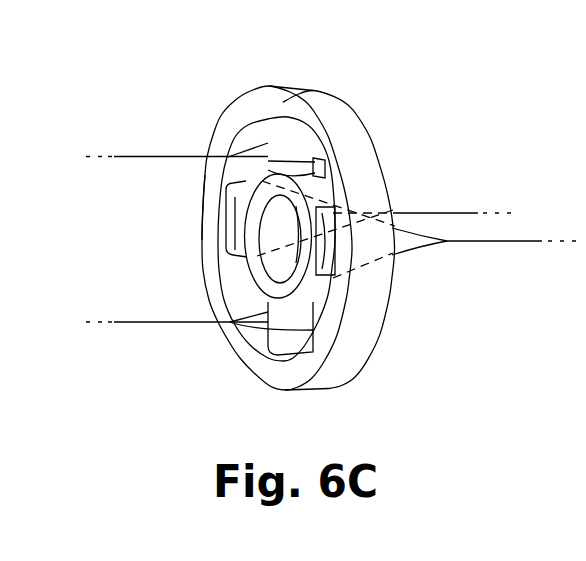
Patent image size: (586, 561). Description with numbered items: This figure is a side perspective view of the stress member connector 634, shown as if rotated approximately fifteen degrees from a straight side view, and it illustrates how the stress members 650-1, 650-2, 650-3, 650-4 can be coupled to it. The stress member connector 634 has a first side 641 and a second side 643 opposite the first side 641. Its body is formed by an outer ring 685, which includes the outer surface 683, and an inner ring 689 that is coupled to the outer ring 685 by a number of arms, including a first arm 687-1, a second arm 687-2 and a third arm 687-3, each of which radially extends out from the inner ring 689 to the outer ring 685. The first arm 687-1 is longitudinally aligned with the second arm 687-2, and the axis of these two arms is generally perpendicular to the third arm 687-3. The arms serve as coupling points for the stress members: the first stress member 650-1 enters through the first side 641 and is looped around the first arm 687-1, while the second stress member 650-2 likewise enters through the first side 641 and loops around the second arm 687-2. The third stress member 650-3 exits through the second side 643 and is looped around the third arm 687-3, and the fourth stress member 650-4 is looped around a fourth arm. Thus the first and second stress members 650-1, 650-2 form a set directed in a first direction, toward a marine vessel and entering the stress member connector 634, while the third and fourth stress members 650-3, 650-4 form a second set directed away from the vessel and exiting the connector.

The stress member connector 634 is at (229, 74).
The first side 641 is at (182, 194).
The second side 643 is at (400, 140).
The outer ring 685 is at (262, 85).
The outer surface 683 is at (345, 363).
The inner ring 689 is at (287, 290).
The first arm 687-1 is at (268, 170).
The second arm 687-2 is at (334, 258).
The third arm 687-3 is at (232, 207).
The first stress member 650-1 is at (153, 155).
The second stress member 650-2 is at (152, 325).
The third stress member 650-3 is at (461, 212).
The fourth stress member 650-4 is at (525, 242).